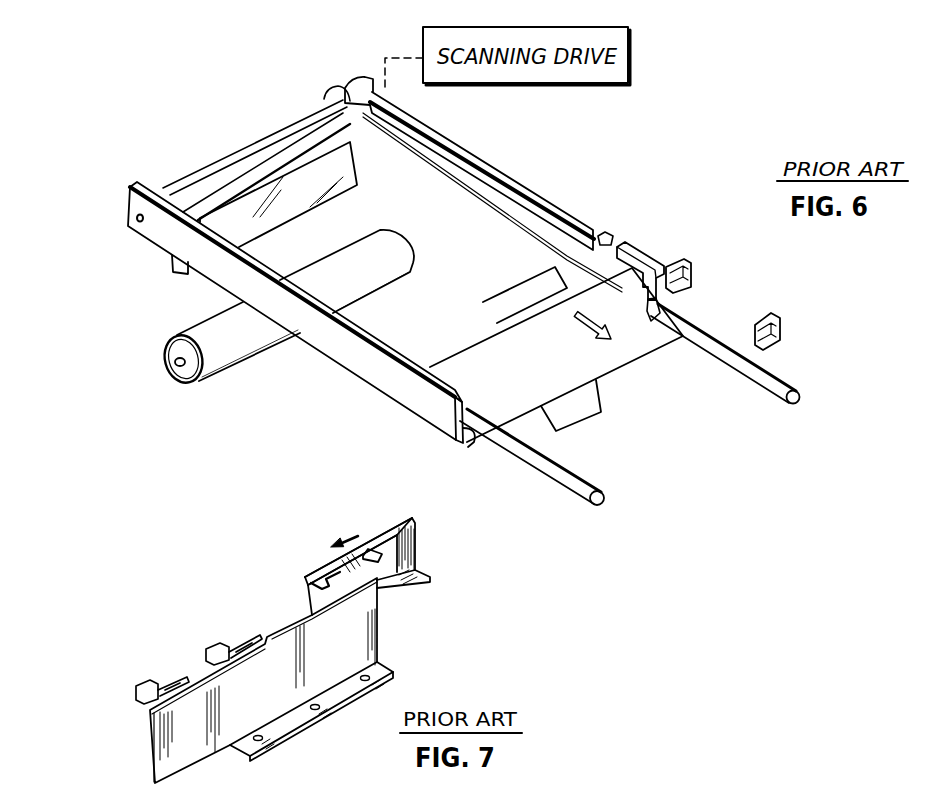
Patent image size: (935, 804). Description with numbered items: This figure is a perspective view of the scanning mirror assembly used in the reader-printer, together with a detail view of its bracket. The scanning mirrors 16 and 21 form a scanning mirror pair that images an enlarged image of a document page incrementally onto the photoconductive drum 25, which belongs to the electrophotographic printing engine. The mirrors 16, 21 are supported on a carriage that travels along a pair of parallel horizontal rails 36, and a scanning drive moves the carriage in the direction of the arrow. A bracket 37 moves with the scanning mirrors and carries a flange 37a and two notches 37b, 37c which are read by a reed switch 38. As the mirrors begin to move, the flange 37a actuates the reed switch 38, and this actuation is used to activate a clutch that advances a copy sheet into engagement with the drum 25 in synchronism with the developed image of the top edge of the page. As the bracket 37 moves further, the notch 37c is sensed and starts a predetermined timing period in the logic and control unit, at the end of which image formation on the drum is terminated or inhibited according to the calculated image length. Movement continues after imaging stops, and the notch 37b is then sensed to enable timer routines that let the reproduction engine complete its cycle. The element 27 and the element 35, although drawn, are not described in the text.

In FIG. 6, the scanning mirror 16 is at (593, 410).
In FIG. 6, the scanning mirror 21 is at (243, 150).
In FIG. 6, the photoconductive drum 25 is at (231, 360).
In FIG. 6, the mirror plate 27 is at (340, 193).
In FIG. 6, the carriage guide rail 35 is at (542, 202).
In FIG. 6, the horizontal rails 36 is at (552, 477).
In FIG. 6, the bracket 37 is at (648, 267).
In FIG. 7, the bracket 37 is at (413, 552).
In FIG. 7, the flange 37a is at (393, 528).
In FIG. 6, the notch 37b is at (592, 251).
In FIG. 7, the notch 37b is at (371, 549).
In FIG. 7, the notch 37c is at (323, 571).
In FIG. 6, the reed switch 38 is at (693, 262).
In FIG. 7, the reed switch 38 is at (217, 648).